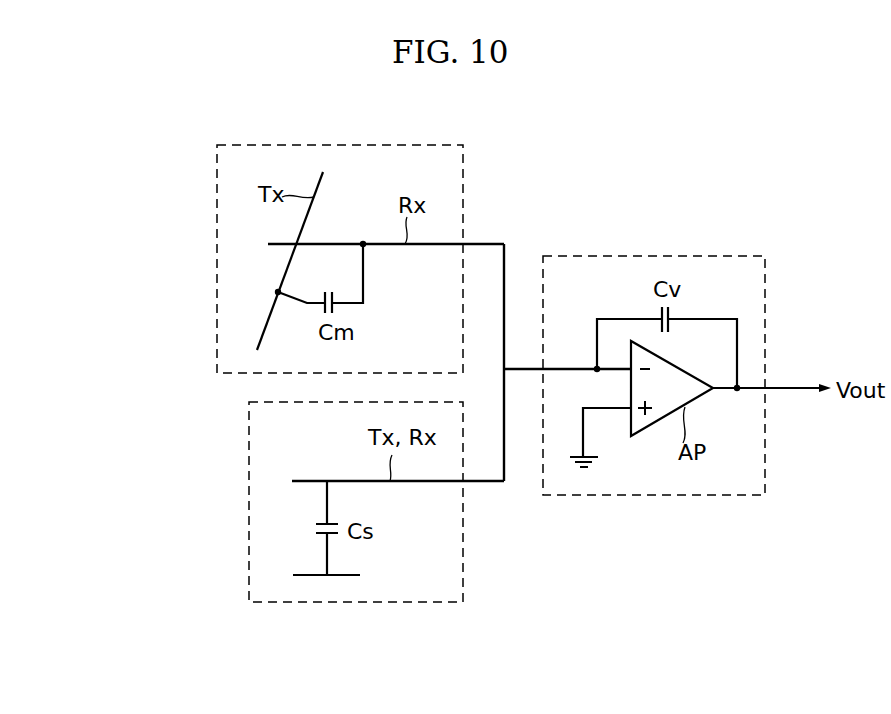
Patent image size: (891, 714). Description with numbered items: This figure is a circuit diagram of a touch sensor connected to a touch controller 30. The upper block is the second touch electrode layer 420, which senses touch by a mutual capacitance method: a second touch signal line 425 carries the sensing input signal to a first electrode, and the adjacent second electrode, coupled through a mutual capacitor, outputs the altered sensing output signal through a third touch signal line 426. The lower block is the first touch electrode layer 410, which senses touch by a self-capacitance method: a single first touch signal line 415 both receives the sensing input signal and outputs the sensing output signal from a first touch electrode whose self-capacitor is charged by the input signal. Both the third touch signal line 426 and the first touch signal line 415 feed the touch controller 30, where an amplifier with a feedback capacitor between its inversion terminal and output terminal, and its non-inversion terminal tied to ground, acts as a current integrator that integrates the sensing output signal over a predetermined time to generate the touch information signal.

The touch controller 30 is at (613, 497).
The first touch electrode layer 410 is at (248, 557).
The first touch signal line 415 is at (432, 481).
The second touch electrode layer 420 is at (215, 303).
The second touch signal line 425 is at (322, 178).
The third touch signal line 426 is at (442, 243).